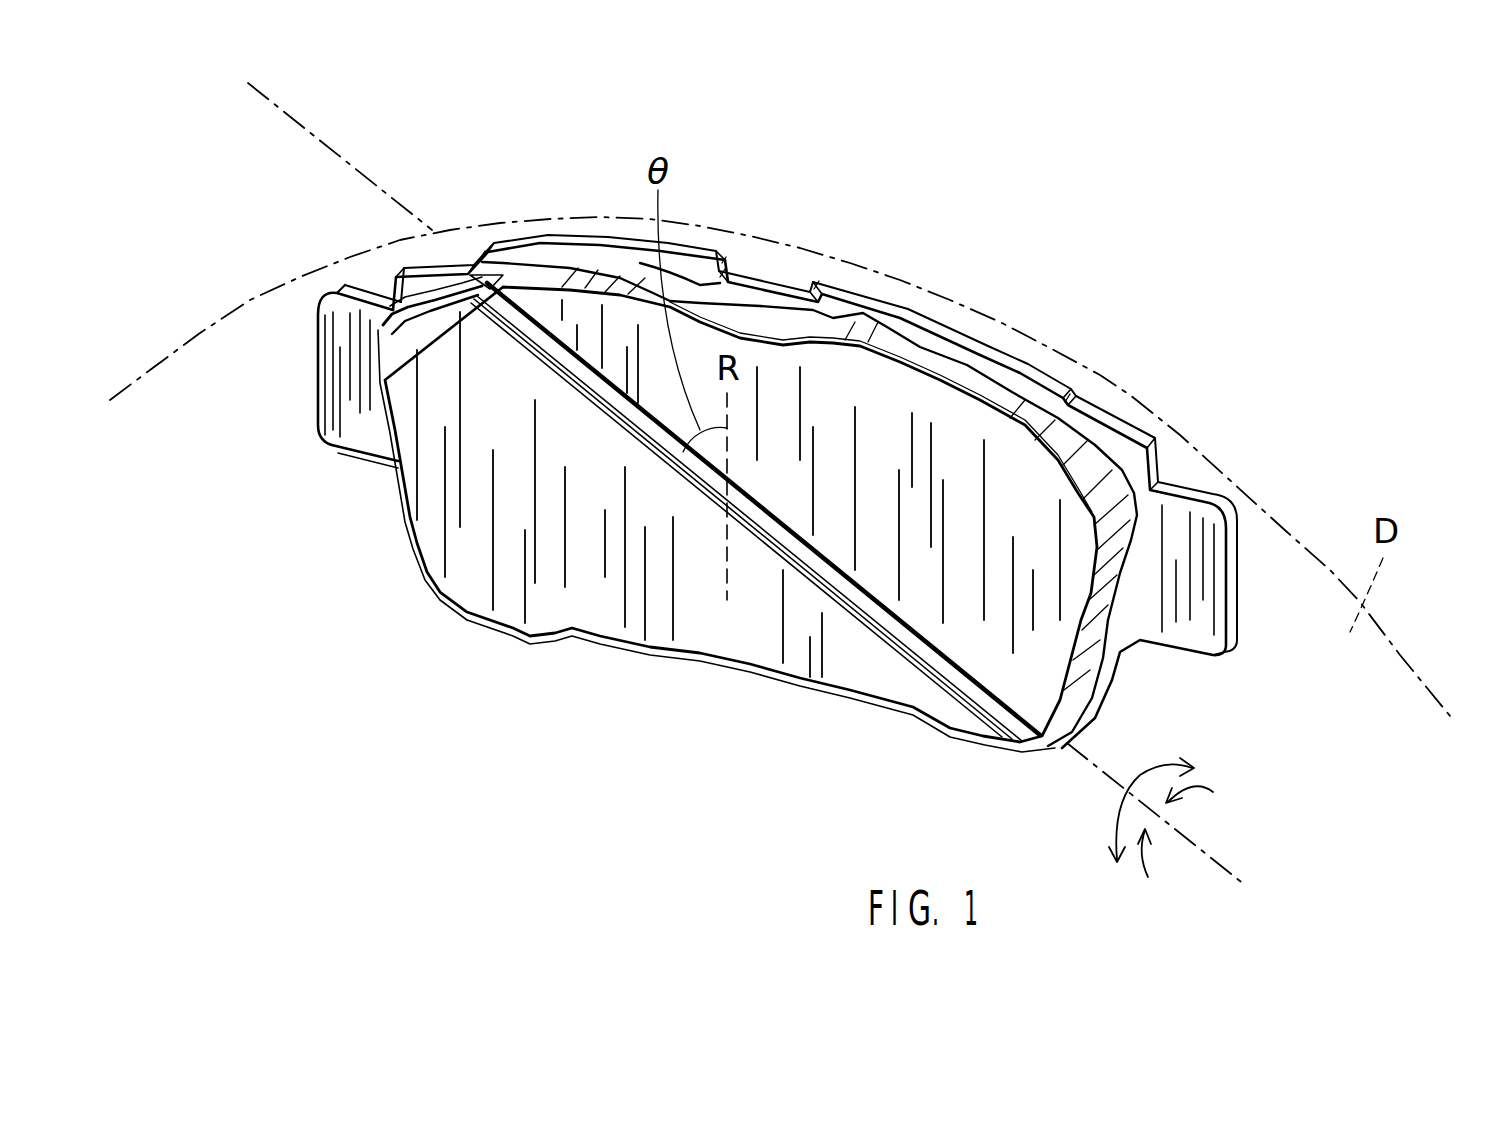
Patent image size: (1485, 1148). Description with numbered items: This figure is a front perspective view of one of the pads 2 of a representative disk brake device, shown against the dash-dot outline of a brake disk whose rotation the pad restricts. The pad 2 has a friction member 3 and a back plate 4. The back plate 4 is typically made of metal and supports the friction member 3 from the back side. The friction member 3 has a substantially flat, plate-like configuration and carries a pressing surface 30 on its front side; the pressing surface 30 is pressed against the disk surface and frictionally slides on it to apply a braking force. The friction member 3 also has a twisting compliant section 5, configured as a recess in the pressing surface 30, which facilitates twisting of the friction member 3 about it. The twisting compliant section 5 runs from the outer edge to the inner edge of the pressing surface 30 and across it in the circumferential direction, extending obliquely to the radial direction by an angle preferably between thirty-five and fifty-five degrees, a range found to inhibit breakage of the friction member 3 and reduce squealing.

The pad 2 is at (762, 512).
The friction member 3 is at (409, 548).
The back plate 4 is at (355, 466).
The twisting compliant section 5 is at (876, 615).
The pressing surface 30 is at (745, 648).